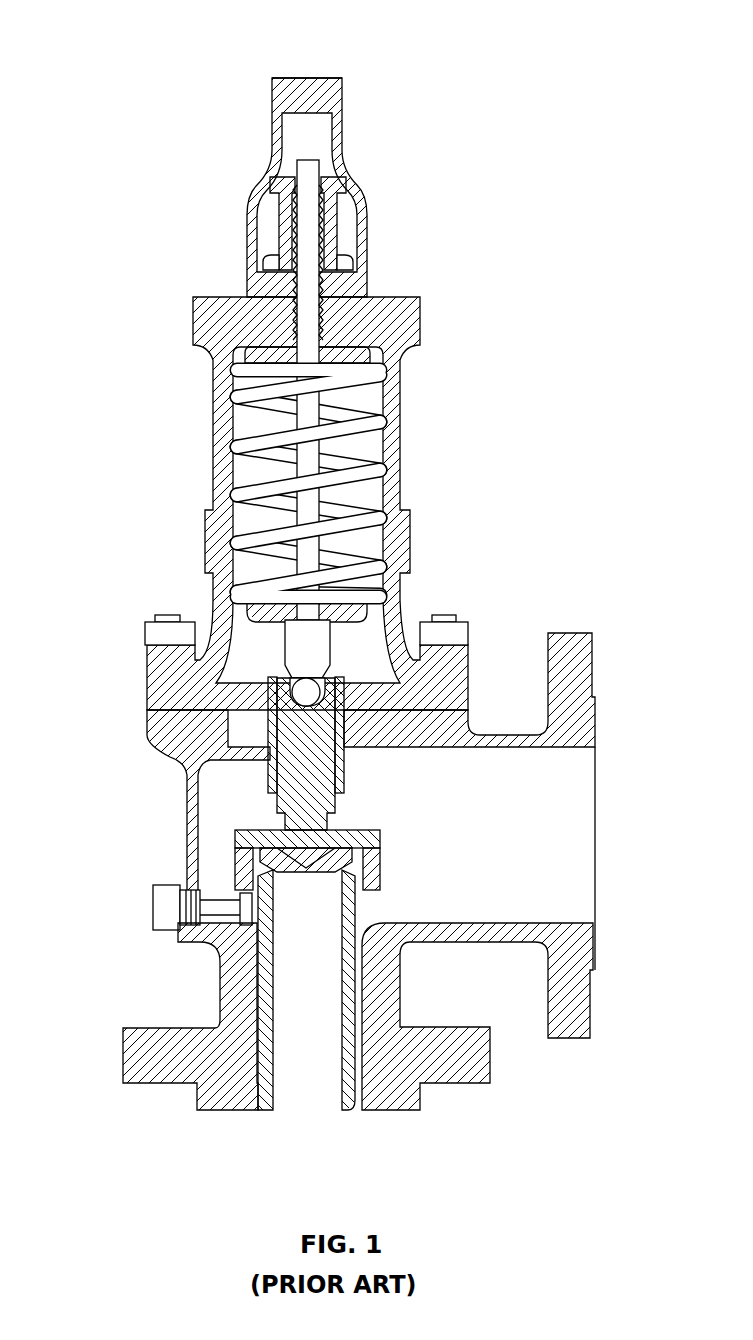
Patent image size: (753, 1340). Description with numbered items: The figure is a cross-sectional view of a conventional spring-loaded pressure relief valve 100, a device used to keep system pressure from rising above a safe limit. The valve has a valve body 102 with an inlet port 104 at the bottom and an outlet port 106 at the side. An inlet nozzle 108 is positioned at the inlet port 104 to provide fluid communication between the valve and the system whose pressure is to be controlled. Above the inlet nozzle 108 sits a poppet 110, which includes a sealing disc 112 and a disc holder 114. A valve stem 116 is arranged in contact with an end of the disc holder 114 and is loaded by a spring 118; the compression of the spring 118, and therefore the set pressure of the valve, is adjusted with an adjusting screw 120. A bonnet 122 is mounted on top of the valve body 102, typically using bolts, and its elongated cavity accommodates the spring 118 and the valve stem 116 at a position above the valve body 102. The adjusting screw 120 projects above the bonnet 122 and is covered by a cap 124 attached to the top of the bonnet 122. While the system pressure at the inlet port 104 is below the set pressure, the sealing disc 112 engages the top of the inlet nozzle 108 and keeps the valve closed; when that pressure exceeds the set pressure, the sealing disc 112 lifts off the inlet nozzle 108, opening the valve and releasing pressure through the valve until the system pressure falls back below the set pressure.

The spring-loaded pressure relief valve 100 is at (302, 62).
The valve body 102 is at (148, 713).
The inlet port 104 is at (257, 1070).
The outlet port 106 is at (596, 752).
The inlet nozzle 108 is at (385, 1112).
The poppet 110 is at (278, 808).
The sealing disc 112 is at (260, 870).
The disc holder 114 is at (278, 768).
The valve stem 116 is at (360, 403).
The spring 118 is at (356, 433).
The adjusting screw 120 is at (333, 228).
The bonnet 122 is at (213, 468).
The cap 124 is at (343, 136).